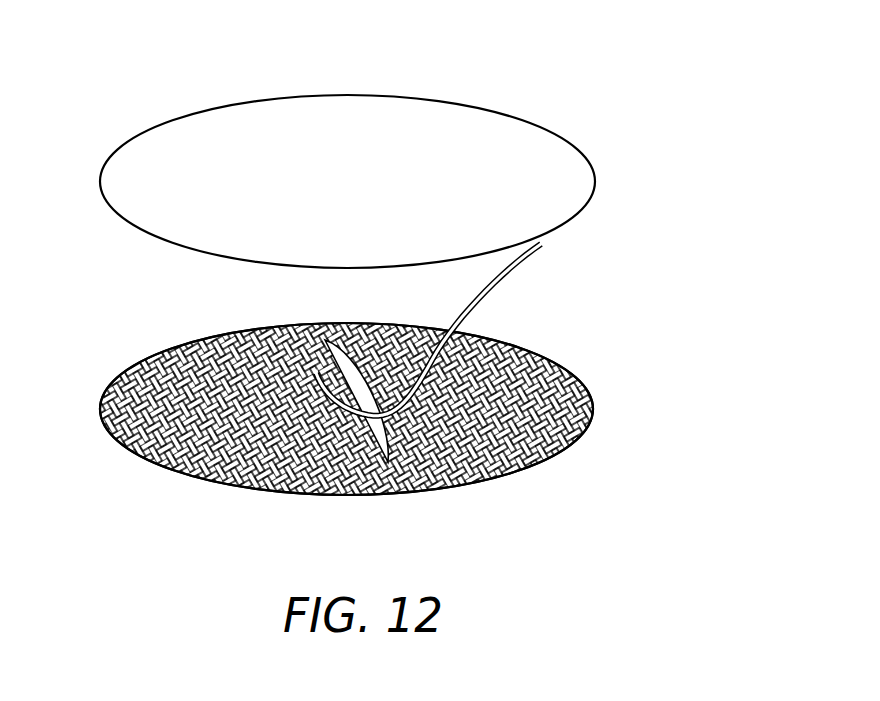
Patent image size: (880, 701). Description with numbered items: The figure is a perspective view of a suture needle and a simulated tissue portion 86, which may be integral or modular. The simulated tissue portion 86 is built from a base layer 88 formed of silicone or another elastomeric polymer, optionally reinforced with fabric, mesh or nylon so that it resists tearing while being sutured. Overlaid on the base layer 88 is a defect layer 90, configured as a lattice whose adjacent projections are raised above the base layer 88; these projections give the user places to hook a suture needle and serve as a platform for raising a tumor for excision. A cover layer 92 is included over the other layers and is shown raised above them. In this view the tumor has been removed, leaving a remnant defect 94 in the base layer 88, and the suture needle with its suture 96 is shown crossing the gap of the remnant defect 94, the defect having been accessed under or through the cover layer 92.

The simulated tissue portion 86 is at (386, 294).
The base layer 88 is at (100, 393).
The defect layer 90 is at (595, 412).
The cover layer 92 is at (565, 137).
The remnant defect 94 is at (371, 441).
The suture 96 is at (467, 310).